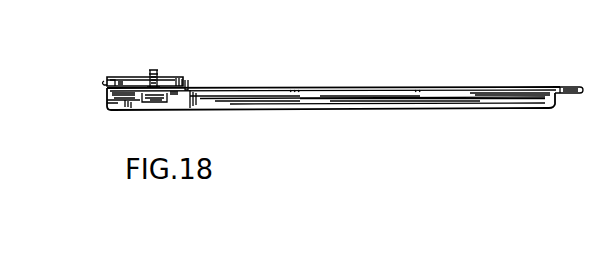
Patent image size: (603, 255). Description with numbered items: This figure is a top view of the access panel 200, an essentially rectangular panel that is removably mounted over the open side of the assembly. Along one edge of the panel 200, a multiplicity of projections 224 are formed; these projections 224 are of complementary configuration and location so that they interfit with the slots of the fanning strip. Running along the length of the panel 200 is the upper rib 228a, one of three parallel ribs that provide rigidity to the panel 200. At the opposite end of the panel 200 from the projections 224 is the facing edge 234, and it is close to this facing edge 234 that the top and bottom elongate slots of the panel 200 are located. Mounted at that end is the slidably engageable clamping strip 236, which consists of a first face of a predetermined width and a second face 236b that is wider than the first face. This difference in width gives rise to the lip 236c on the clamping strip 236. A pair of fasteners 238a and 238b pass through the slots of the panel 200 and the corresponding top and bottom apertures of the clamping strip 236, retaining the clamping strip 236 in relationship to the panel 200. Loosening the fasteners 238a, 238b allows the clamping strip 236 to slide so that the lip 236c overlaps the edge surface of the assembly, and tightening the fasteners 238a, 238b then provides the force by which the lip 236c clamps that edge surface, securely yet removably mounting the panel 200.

The access panel 200 is at (318, 98).
The projections 224 is at (577, 93).
The upper rib 228a is at (443, 100).
The facing edge 234 is at (107, 100).
The clamping strip 236 is at (151, 54).
The second face 236b is at (190, 86).
The lip 236c is at (112, 78).
The fastener 238a is at (153, 72).
The fastener 238b is at (153, 72).